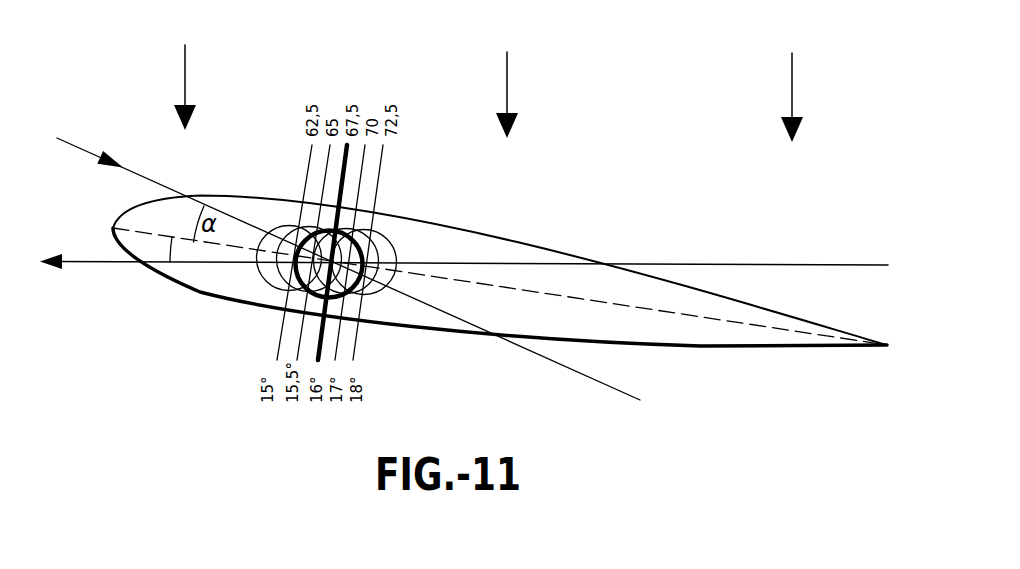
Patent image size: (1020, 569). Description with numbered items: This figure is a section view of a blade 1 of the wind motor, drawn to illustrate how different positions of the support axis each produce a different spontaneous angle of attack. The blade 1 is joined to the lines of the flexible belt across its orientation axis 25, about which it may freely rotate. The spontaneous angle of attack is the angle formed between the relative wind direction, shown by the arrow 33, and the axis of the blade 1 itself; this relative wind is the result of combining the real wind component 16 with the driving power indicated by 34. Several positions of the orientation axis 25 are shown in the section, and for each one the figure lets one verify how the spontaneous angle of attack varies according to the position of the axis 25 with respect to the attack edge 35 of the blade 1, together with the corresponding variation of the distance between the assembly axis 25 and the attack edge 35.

The blade 1 is at (672, 328).
The real wind component 16 is at (187, 78).
The orientation axis 25 is at (368, 213).
The relative wind direction arrow 33 is at (92, 153).
The driving power 34 is at (73, 263).
The attack edge 35 is at (112, 228).